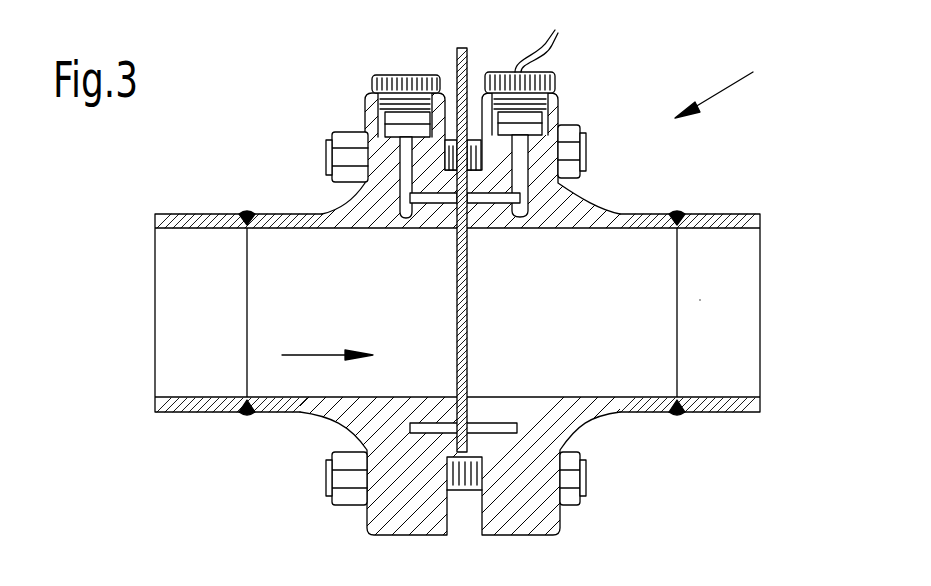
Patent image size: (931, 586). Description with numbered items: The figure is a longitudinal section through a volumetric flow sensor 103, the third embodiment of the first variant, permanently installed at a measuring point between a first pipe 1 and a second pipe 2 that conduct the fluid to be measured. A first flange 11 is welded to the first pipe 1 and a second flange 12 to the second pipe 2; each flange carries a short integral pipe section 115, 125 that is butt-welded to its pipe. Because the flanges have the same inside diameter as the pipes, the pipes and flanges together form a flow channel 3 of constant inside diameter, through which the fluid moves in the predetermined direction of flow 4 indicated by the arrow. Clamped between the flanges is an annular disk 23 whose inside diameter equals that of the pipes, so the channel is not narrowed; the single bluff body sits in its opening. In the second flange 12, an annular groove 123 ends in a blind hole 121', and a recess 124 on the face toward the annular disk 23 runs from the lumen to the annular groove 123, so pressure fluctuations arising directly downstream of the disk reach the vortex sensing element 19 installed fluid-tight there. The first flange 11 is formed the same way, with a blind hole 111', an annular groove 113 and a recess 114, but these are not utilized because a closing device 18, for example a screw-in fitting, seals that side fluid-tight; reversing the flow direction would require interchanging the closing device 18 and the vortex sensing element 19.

The first pipe 1 is at (177, 215).
The second pipe 2 is at (757, 213).
The flow channel 3 is at (753, 278).
The direction of flow 4 is at (320, 357).
The first flange 11 is at (365, 112).
The second flange 12 is at (560, 112).
The closing device 18 is at (392, 74).
The vortex sensing element 19 is at (555, 115).
The annular disk 23 is at (468, 56).
The flow sensor 103 is at (735, 81).
The blind hole 111' is at (337, 152).
The blind hole 121' is at (586, 162).
The annular groove 113 is at (413, 197).
The annular groove 123 is at (567, 193).
The recess 114 is at (452, 232).
The recess 124 is at (477, 232).
The integral pipe section 115 is at (282, 222).
The integral pipe section 125 is at (640, 222).